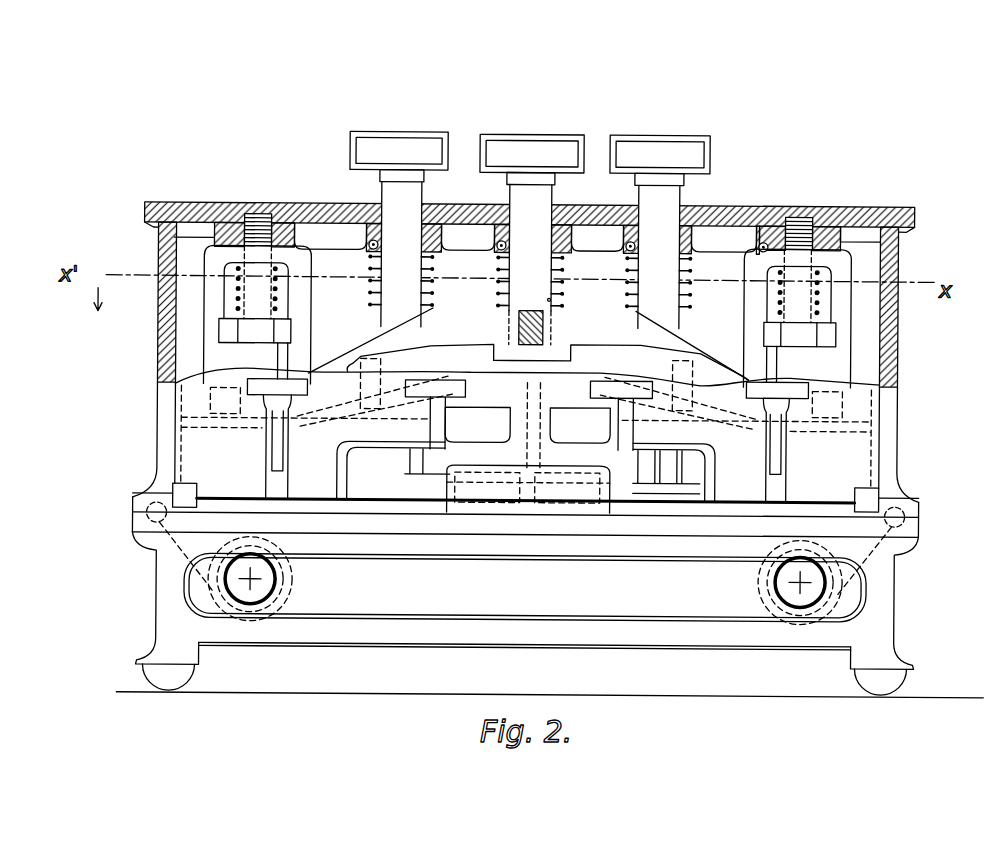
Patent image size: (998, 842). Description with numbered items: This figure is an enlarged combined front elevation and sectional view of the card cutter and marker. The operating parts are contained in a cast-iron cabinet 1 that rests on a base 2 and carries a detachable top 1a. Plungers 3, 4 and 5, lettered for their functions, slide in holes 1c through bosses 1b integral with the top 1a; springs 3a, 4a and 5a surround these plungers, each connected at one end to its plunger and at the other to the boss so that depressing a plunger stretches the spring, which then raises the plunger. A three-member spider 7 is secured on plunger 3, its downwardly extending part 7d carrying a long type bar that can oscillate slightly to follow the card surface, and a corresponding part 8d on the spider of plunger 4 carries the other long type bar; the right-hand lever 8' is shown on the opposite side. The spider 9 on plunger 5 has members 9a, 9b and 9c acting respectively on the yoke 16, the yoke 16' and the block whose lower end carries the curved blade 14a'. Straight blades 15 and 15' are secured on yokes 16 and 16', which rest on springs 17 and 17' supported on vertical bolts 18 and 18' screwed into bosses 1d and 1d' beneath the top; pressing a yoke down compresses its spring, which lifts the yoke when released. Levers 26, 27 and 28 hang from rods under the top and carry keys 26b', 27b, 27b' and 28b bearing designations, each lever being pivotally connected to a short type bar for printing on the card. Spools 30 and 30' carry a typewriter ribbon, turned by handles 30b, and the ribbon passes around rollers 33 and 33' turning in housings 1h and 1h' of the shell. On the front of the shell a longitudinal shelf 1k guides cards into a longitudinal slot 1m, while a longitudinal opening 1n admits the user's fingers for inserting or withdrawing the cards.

The cabinet 1 is at (896, 342).
The top 1a is at (732, 208).
The boss 1b is at (431, 248).
The hole 1c is at (431, 242).
The boss 1d is at (254, 208).
The boss 1d' is at (814, 203).
The housing 1h is at (125, 499).
The housing 1h' is at (931, 502).
The shelf 1k is at (502, 531).
The slot 1m is at (318, 511).
The opening 1n is at (390, 464).
The base 2 is at (622, 608).
The plunger 3 is at (395, 132).
The spring 3a is at (372, 320).
The plunger 4 is at (674, 133).
The spring 4a is at (642, 309).
The plunger 5 is at (543, 132).
The spring 5a is at (556, 298).
The three-member spider 7 is at (366, 411).
The downwardly extending part 7d is at (515, 476).
The right lever 8' is at (674, 453).
The downwardly extending part 8d is at (597, 476).
The three-member spider 9 is at (490, 333).
The member 9a is at (345, 367).
The member 9b is at (544, 325).
The member 9c is at (720, 352).
The blade 14a' is at (546, 511).
The straight blade 15 is at (334, 421).
The straight blade 15' is at (781, 424).
The yoke 16 is at (274, 305).
The yoke 16' is at (815, 317).
The spring 17 is at (290, 291).
The spring 17' is at (832, 296).
The vertical bolt 18 is at (235, 294).
The vertical bolt 18' is at (775, 298).
The lever 26 is at (277, 453).
The plunger head 26b' is at (255, 397).
The lever 27 is at (434, 423).
The key 27b is at (458, 415).
The key 27b' is at (599, 416).
The lever 28 is at (777, 452).
The key 28b is at (804, 386).
The spool 30 is at (273, 578).
The spool 30' is at (776, 582).
The handle 30b is at (258, 590).
The roller 33 is at (155, 547).
The roller 33' is at (906, 548).